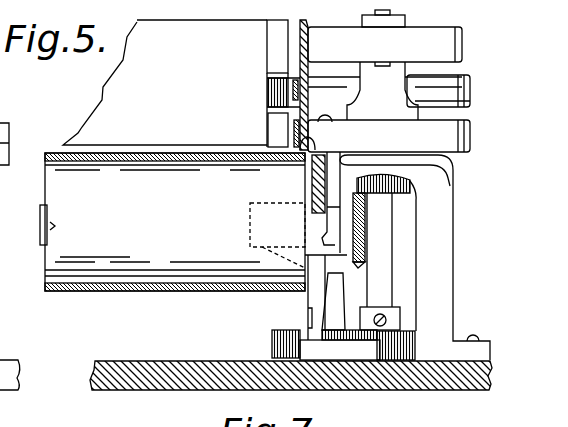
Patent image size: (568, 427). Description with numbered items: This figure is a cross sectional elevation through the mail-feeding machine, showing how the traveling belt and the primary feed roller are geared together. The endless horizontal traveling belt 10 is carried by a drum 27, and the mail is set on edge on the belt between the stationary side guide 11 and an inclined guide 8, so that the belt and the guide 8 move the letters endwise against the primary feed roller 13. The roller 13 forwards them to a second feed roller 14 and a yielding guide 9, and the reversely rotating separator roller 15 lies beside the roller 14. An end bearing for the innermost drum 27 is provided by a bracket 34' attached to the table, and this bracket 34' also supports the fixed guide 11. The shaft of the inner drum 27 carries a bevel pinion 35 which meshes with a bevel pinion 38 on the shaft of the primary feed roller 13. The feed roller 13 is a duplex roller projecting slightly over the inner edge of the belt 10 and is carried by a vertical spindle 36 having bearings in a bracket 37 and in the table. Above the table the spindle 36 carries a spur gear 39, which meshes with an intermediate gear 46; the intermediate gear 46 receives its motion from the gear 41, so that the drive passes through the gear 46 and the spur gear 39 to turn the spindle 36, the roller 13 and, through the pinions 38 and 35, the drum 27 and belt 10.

The inclined guide 8 is at (165, 82).
The yielding guide 9 is at (270, 48).
The endless horizontal traveling belt 10 is at (150, 166).
The stationary side guide 11 is at (308, 56).
The primary feed roller 13 is at (389, 81).
The second feed roller 14 is at (473, 86).
The reversely rotating separator roller 15 is at (275, 90).
The drum 27 is at (223, 235).
The bracket 34' is at (301, 256).
The bevel pinion 35 is at (343, 261).
The vertical spindle 36 is at (380, 290).
The bracket 37 is at (433, 210).
The bevel pinion 38 is at (398, 193).
The spur gear 39 is at (408, 356).
The gear 41 is at (174, 362).
The intermediate gear 46 is at (272, 345).